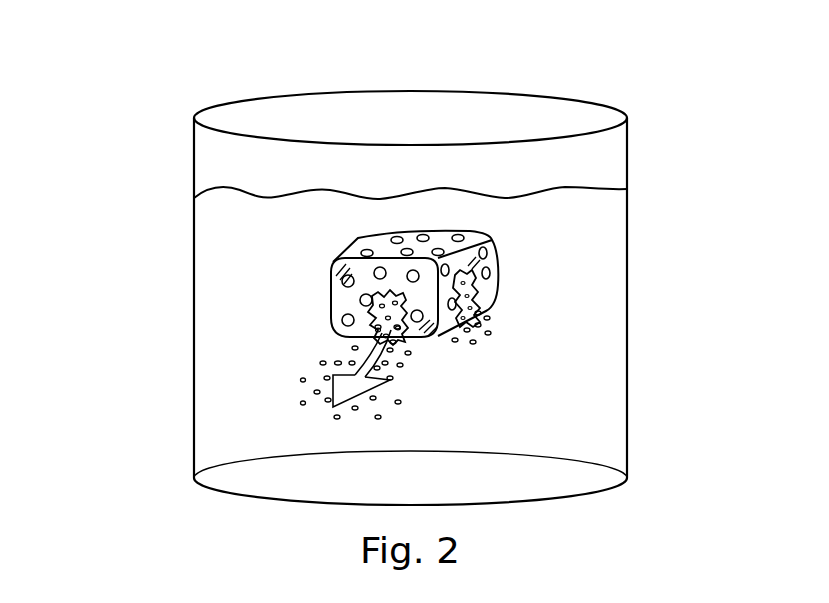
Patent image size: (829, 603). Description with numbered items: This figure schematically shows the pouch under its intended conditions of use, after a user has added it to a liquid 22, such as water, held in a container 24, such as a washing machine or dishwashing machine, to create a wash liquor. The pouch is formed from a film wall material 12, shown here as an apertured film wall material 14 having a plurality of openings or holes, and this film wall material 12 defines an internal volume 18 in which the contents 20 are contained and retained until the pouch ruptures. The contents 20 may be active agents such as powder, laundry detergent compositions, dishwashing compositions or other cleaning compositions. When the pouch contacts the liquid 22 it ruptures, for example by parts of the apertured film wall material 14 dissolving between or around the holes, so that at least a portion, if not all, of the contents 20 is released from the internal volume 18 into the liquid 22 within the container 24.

The film wall material 12 is at (377, 246).
The apertured film wall material 14 is at (345, 292).
The internal volume 18 is at (388, 297).
The contents 20 is at (301, 380).
The liquid 22 is at (607, 218).
The container 24 is at (627, 280).